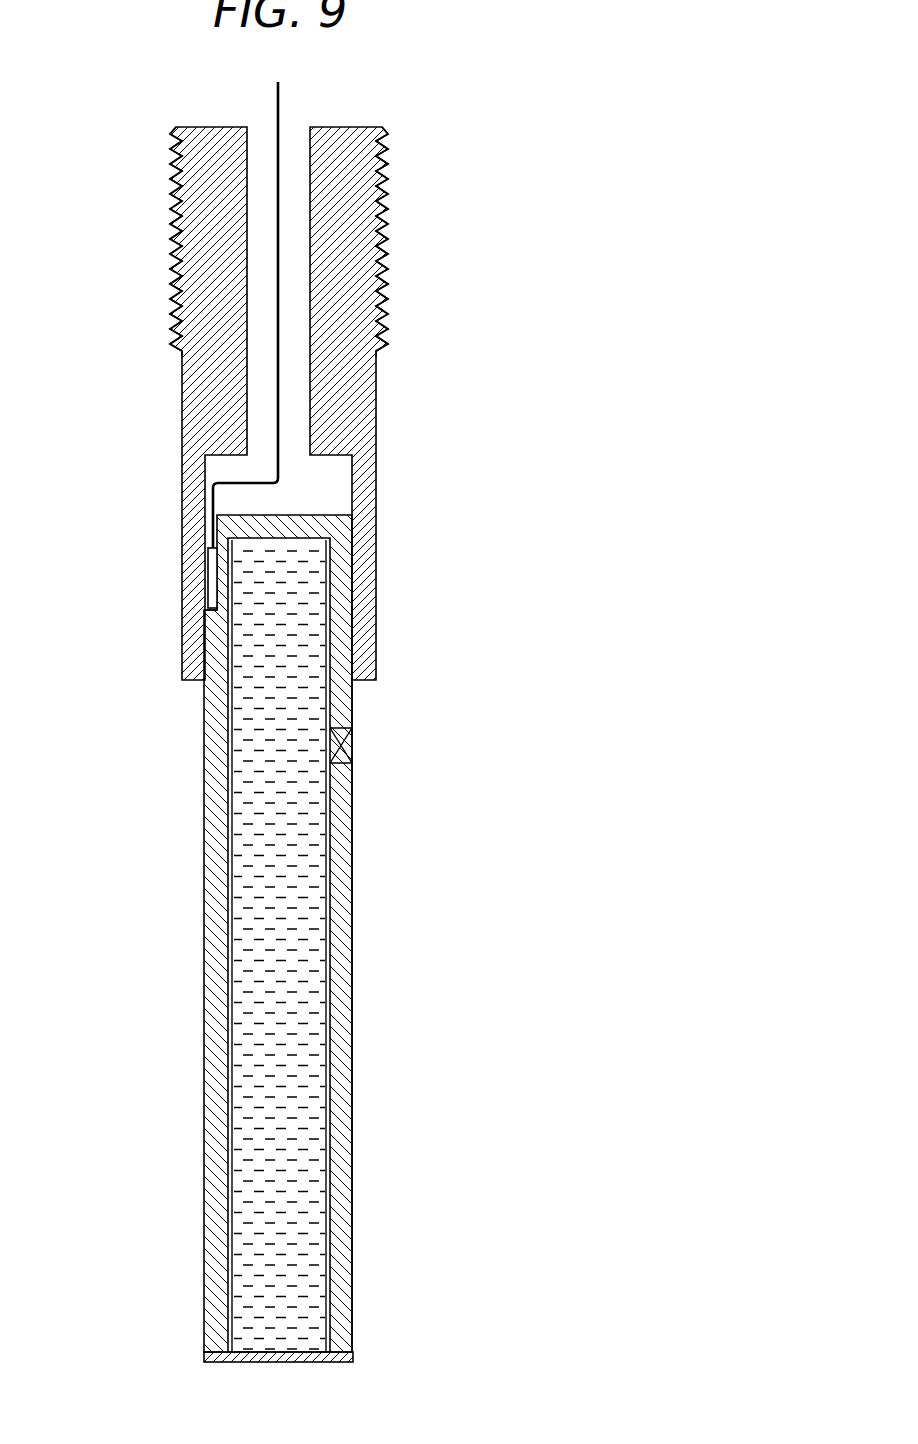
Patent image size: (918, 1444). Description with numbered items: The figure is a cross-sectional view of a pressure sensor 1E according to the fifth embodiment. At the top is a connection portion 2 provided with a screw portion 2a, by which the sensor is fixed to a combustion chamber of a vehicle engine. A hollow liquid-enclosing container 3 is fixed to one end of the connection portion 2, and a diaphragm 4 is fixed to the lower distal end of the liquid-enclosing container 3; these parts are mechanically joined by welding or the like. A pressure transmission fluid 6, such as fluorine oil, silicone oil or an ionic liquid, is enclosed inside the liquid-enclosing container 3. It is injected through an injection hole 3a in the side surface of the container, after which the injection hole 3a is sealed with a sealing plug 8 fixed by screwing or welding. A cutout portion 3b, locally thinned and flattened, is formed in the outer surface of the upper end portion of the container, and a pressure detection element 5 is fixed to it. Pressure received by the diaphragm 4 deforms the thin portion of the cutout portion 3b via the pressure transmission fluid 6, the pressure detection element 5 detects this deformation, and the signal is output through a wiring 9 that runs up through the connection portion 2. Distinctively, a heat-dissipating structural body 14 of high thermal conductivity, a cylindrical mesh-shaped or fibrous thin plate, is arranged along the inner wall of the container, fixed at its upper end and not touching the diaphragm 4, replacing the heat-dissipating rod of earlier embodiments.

The pressure sensor 1E is at (487, 135).
The connection portion 2 is at (377, 400).
The screw portion 2a is at (174, 233).
The liquid-enclosing container 3 is at (204, 858).
The injection hole 3a is at (353, 728).
The cutout portion 3b is at (212, 611).
The diaphragm 4 is at (354, 1357).
The pressure detection element 5 is at (205, 570).
The pressure transmission fluid 6 is at (299, 985).
The sealing plug 8 is at (333, 750).
The wiring 9 is at (275, 412).
The heat-dissipating structural body 14 is at (229, 1120).